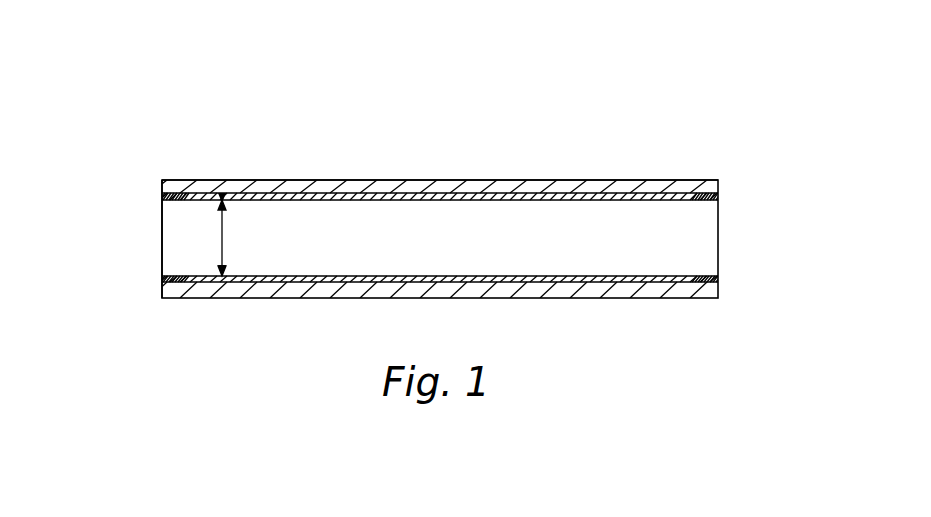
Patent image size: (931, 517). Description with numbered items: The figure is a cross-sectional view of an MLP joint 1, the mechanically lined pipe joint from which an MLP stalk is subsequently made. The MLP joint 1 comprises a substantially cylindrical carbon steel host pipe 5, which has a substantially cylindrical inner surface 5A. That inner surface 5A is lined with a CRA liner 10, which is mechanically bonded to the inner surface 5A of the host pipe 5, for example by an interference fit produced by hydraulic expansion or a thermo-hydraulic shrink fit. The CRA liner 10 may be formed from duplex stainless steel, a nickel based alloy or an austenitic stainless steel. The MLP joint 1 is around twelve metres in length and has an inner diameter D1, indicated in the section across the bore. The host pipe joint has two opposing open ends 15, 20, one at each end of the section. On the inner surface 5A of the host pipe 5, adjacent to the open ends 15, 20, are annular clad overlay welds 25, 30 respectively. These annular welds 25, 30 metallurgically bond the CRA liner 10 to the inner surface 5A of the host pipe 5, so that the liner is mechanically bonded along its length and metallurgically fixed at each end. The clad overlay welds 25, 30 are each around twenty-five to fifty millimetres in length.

The MLP joint 1 is at (716, 103).
The host pipe 5 is at (502, 191).
The inner surface 5A is at (626, 194).
The CRA liner 10 is at (305, 196).
The open end 15 is at (718, 240).
The open end 20 is at (160, 217).
The annular clad overlay weld 25 is at (708, 199).
The annular clad overlay weld 30 is at (165, 194).
The inner diameter D1 is at (222, 235).